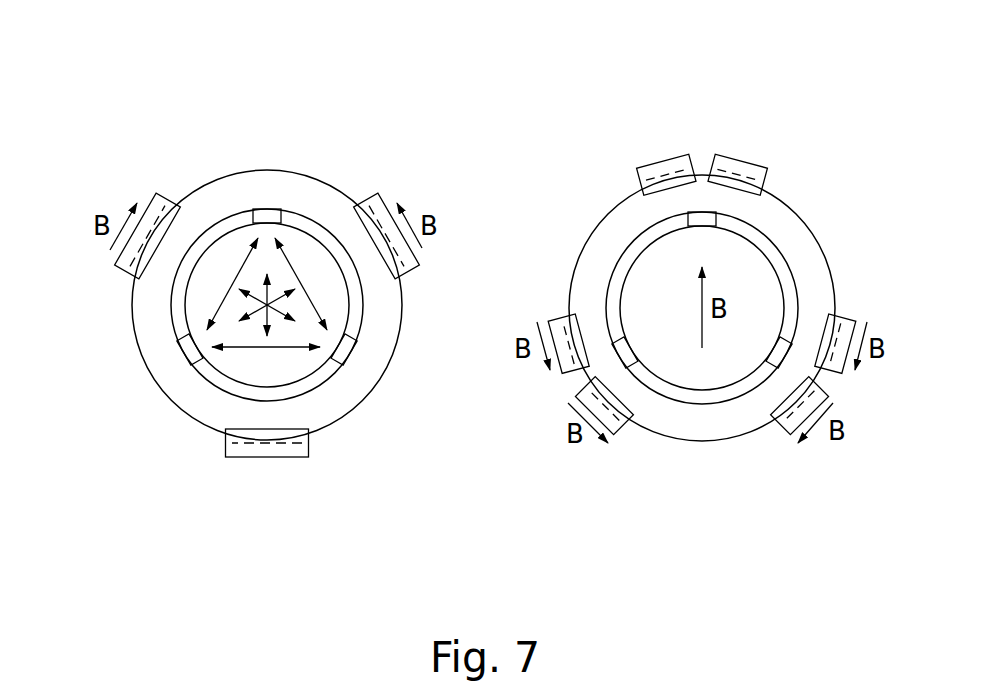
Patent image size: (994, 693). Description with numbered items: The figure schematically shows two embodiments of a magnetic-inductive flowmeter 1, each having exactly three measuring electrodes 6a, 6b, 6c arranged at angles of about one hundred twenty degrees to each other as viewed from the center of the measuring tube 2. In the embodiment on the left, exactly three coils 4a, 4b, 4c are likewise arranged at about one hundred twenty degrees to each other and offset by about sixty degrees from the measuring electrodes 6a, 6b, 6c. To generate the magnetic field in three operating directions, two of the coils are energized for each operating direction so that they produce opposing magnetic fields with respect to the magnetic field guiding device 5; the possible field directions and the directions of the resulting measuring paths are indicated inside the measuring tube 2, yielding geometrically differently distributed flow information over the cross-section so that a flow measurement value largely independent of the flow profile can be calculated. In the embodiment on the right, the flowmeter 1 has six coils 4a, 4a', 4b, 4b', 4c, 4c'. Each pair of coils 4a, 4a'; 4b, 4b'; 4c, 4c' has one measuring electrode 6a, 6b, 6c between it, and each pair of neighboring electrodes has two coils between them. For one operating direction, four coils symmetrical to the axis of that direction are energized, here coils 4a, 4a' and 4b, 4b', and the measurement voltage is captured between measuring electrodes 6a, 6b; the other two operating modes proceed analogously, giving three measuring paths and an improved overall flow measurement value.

The magnetic-inductive flowmeter 1 is at (540, 93).
The measuring tube 2 is at (230, 215).
The coil 4a is at (472, 309).
The coil 4a' is at (609, 486).
The coil 4b is at (459, 349).
The coil 4b' is at (880, 413).
The coil 4c is at (499, 309).
The coil 4c' is at (668, 108).
The magnetic field guiding device 5 is at (133, 323).
The measuring electrode 6a is at (342, 362).
The measuring electrode 6b is at (263, 213).
The measuring electrode 6c is at (190, 352).